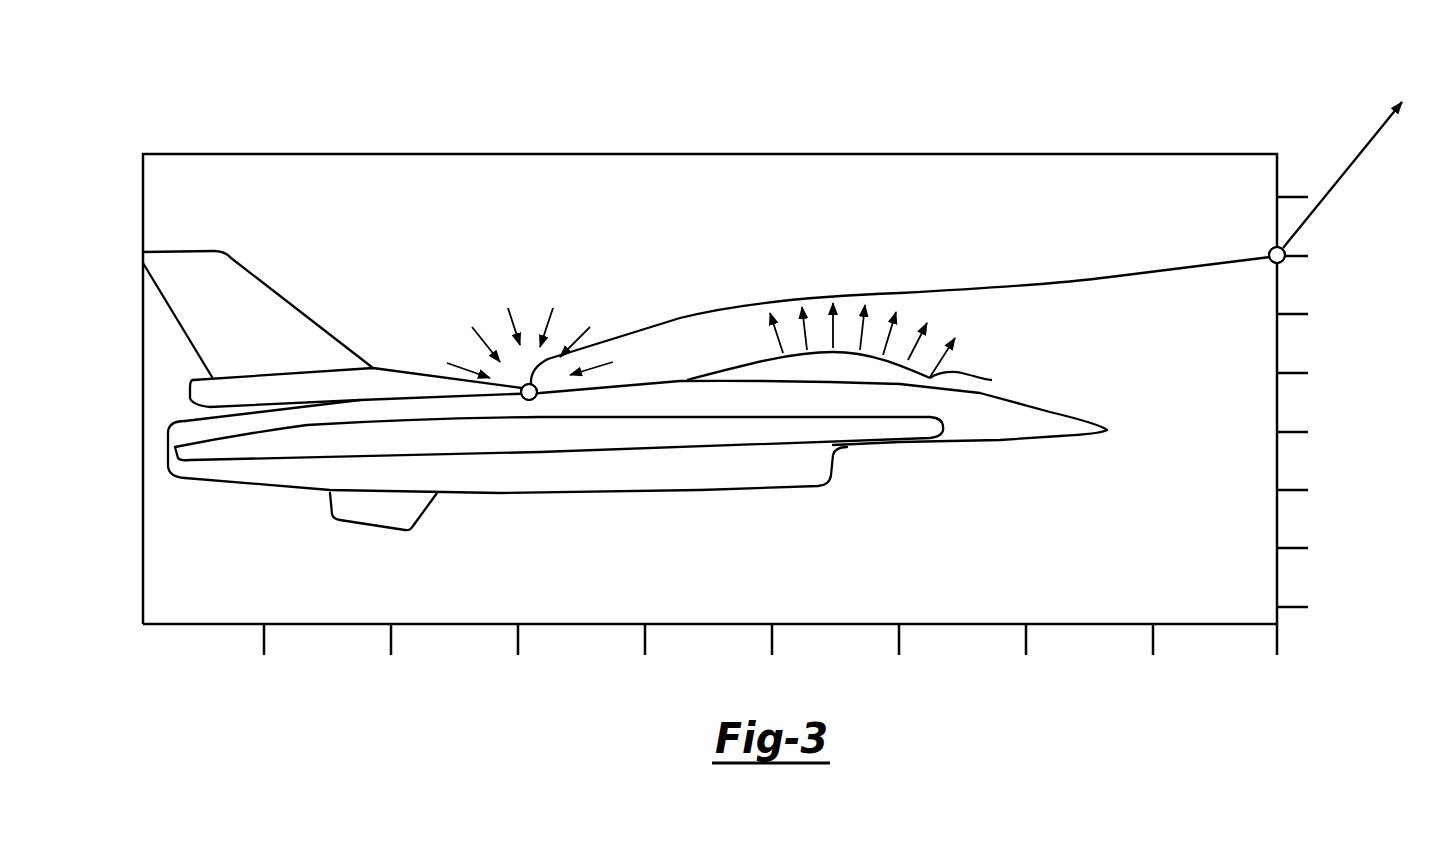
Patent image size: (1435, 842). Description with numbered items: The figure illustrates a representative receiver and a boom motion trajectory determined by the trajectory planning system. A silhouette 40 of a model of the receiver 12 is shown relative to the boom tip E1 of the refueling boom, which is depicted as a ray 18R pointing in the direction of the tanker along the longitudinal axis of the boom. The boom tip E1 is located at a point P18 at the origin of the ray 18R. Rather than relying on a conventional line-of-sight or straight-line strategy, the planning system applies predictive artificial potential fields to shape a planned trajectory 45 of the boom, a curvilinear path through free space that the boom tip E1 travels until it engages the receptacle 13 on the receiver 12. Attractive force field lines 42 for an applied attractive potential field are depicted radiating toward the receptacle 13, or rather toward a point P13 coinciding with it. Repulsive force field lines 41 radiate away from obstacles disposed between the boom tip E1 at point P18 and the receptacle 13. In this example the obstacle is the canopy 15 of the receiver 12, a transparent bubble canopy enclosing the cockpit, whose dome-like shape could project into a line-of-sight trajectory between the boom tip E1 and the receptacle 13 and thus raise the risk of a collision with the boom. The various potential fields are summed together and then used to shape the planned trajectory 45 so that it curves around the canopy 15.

The receiver 12 is at (1055, 112).
The receptacle 13 is at (529, 400).
The point coinciding with the receptacle P13 is at (529, 384).
The canopy 15 is at (992, 380).
The silhouette 40 is at (858, 272).
The repulsive force field lines 41 is at (975, 340).
The attractive force field lines 42 is at (590, 295).
The planned trajectory 45 is at (1110, 277).
The boom tip point P18 is at (1285, 258).
The ray 18R is at (1353, 160).
The boom tip E1 is at (1320, 250).